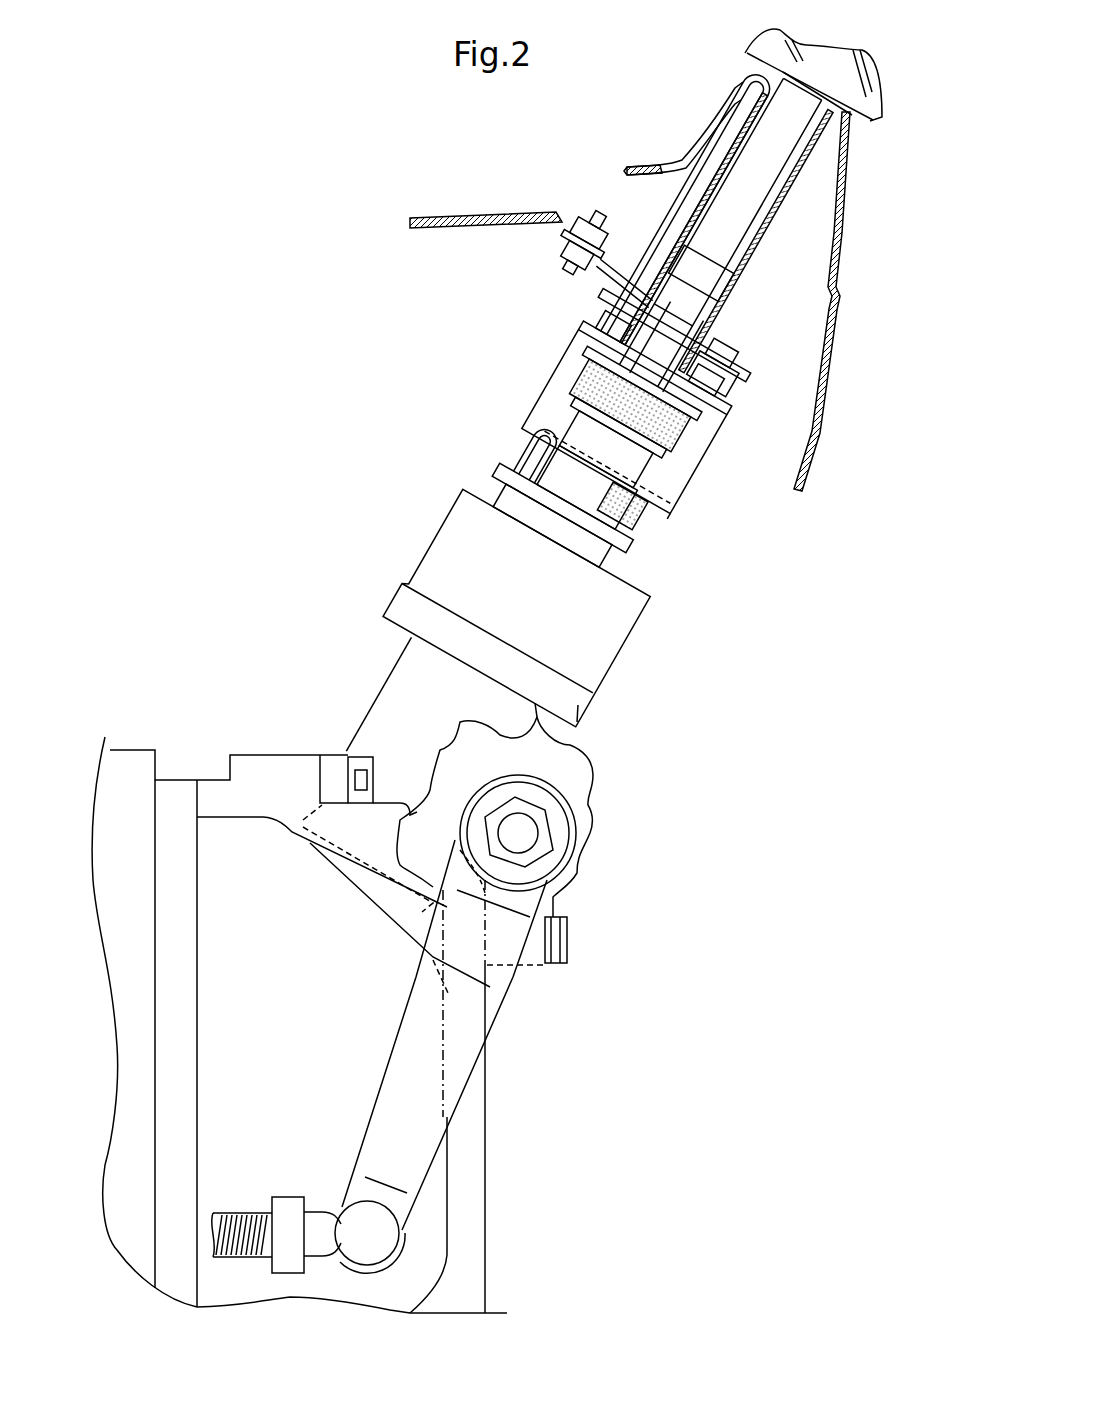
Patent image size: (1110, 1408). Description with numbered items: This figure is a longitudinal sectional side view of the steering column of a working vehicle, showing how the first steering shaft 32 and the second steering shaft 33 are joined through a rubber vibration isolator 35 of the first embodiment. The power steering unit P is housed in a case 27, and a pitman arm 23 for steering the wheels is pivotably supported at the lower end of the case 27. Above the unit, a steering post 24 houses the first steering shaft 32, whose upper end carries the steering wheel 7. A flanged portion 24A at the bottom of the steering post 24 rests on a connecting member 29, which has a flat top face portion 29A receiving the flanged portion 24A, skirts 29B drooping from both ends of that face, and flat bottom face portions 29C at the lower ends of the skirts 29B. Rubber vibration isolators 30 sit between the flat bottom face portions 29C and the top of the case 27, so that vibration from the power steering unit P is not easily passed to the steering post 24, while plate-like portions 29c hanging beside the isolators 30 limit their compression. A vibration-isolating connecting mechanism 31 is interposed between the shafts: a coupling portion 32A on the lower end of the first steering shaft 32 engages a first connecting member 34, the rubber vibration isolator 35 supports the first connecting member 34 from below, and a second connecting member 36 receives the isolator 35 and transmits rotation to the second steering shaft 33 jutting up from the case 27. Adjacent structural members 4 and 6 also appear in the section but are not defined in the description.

The vehicle body frame 4 is at (127, 753).
The bracket 6 is at (700, 140).
The steering wheel 7 is at (870, 121).
The pitman arm 23 is at (397, 1048).
The steering post 24 is at (788, 197).
The flanged portion 24A is at (740, 367).
The case 27 is at (613, 640).
The connecting member 29 is at (675, 497).
The flat top face portion 29A is at (597, 303).
The skirt 29B is at (567, 367).
The flat bottom face portion 29C is at (550, 433).
The plate-like portion 29c is at (537, 460).
The rubber vibration isolator 30 is at (637, 517).
The vibration-isolating connecting mechanism 31 is at (686, 445).
The first steering shaft 32 is at (770, 133).
The coupling portion 32A is at (685, 267).
The second steering shaft 33 is at (580, 497).
The first connecting member 34 is at (653, 347).
The rubber vibration isolator 35 is at (690, 437).
The second connecting member 36 is at (633, 450).